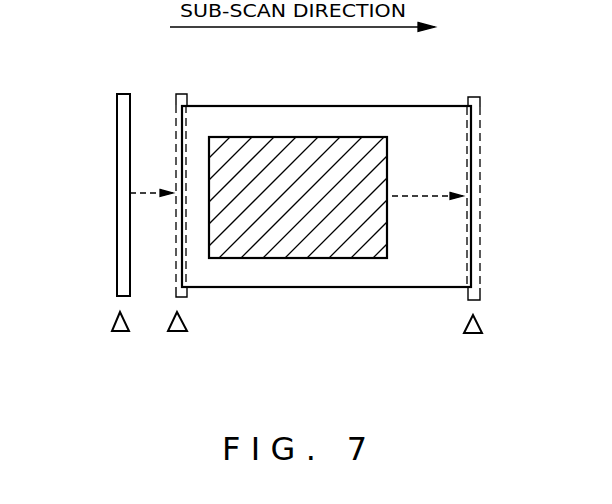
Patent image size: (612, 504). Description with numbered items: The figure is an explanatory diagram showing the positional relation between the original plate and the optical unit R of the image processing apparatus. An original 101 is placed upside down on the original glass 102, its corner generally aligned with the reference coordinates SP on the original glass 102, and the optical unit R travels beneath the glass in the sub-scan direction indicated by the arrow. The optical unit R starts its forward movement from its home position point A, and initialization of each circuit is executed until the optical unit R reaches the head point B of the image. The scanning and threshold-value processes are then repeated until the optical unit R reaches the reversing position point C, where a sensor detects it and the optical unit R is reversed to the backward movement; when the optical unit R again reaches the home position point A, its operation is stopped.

The original 101 is at (312, 258).
The original glass 102 is at (431, 106).
The optical unit R is at (117, 133).
The reference coordinates SP is at (180, 95).
The home position point A is at (118, 334).
The head point of the image B is at (176, 334).
The reversing position point C is at (473, 336).